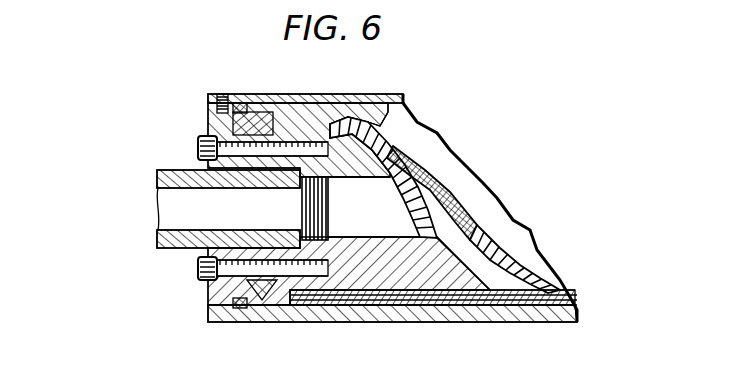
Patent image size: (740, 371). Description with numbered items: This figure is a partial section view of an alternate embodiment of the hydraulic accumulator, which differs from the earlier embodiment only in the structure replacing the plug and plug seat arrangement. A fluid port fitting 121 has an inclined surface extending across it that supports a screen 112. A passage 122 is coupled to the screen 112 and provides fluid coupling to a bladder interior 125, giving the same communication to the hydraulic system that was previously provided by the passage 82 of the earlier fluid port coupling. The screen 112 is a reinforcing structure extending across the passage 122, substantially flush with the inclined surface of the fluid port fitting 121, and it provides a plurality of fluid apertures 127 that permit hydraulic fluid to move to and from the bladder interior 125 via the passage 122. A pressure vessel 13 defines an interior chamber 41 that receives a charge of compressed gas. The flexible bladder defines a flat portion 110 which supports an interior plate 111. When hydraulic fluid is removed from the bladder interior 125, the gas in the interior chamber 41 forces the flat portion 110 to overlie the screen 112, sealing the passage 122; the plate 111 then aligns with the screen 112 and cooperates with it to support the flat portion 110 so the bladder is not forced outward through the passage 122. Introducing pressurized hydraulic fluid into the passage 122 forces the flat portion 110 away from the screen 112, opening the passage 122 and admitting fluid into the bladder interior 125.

The pressure vessel 13 is at (366, 94).
The interior chamber 41 is at (507, 230).
The passage 82 is at (379, 223).
The flat portion 110 is at (440, 192).
The interior plate 111 is at (478, 200).
The screen 112 is at (405, 168).
The fluid port fitting 121 is at (353, 277).
The passage 122 is at (170, 230).
The bladder interior 125 is at (490, 305).
The fluid apertures 127 is at (367, 181).